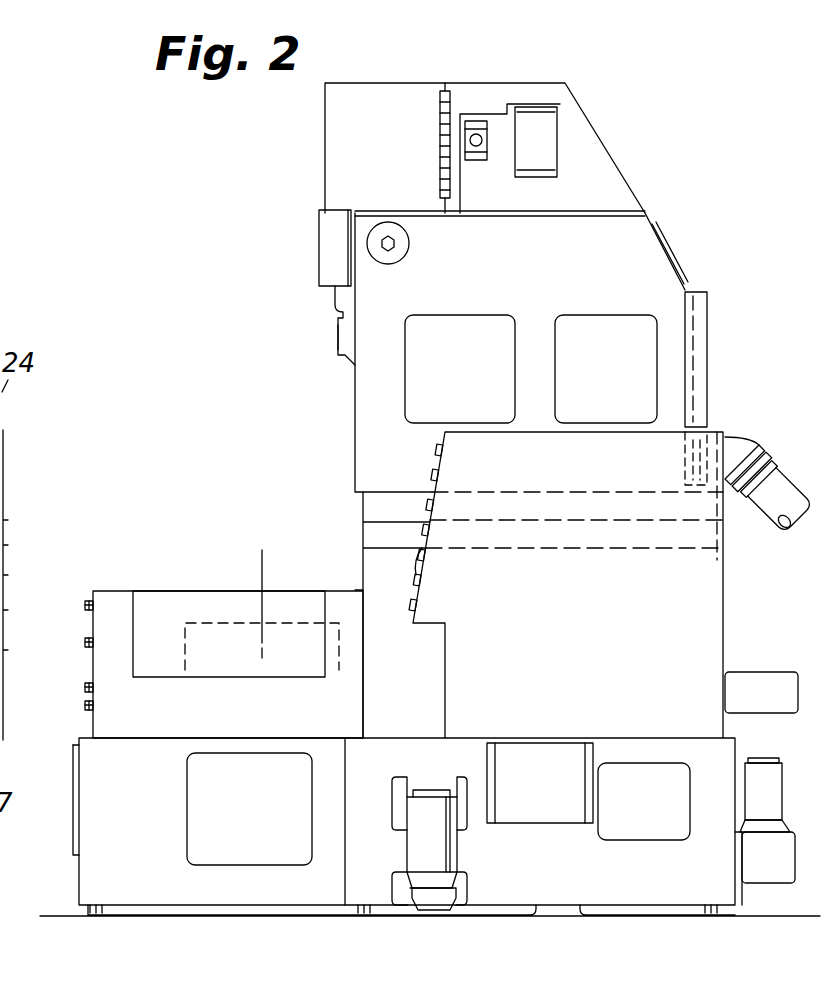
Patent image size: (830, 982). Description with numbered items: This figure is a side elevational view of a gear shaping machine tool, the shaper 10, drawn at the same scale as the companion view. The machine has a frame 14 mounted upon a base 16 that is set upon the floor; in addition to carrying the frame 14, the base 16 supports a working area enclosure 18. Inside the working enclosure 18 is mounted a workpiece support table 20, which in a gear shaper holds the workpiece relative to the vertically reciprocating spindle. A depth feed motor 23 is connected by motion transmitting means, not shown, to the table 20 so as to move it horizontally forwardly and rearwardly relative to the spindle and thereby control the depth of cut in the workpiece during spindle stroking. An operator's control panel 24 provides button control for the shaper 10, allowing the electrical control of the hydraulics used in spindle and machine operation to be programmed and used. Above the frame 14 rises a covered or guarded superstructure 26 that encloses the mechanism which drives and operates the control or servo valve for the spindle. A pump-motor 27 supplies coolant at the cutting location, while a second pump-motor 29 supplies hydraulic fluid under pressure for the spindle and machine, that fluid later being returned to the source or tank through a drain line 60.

The shaper 10 is at (692, 210).
The frame 14 is at (688, 284).
The base 16 is at (738, 752).
The working area enclosure 18 is at (123, 591).
The workpiece support table 20 is at (208, 623).
The depth feed motor 23 is at (766, 683).
The operator's control panel 24 is at (428, 466).
The covered or guarded superstructure 26 is at (594, 117).
The pump-motor 27 is at (442, 851).
The pump-motor 29 is at (772, 873).
The drain line 60 is at (784, 478).